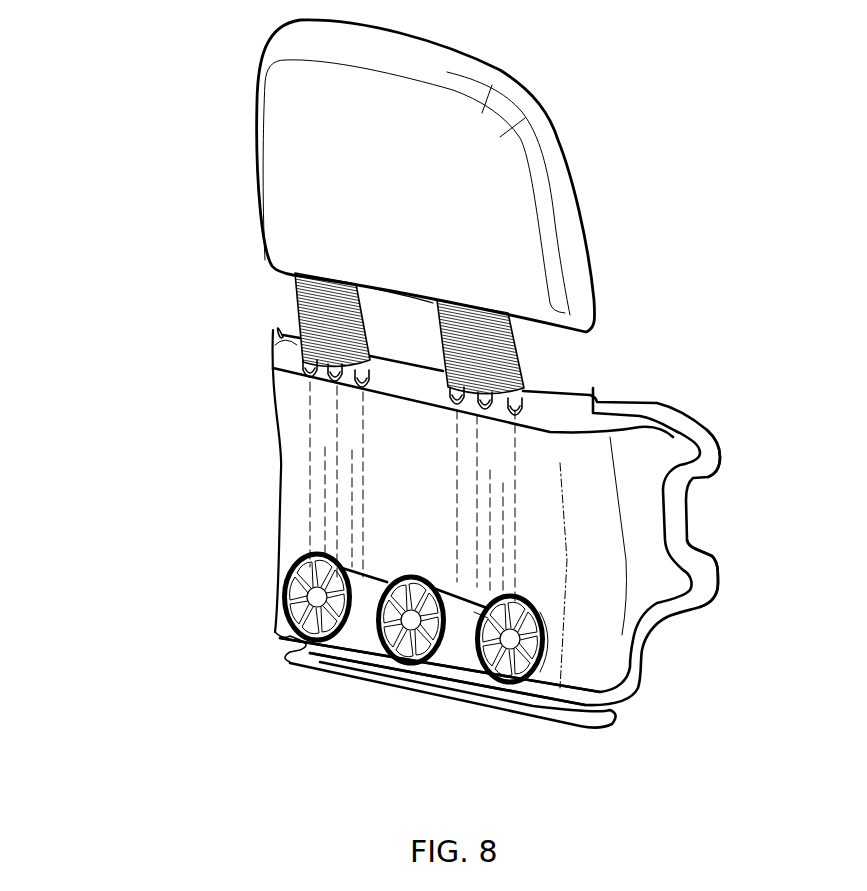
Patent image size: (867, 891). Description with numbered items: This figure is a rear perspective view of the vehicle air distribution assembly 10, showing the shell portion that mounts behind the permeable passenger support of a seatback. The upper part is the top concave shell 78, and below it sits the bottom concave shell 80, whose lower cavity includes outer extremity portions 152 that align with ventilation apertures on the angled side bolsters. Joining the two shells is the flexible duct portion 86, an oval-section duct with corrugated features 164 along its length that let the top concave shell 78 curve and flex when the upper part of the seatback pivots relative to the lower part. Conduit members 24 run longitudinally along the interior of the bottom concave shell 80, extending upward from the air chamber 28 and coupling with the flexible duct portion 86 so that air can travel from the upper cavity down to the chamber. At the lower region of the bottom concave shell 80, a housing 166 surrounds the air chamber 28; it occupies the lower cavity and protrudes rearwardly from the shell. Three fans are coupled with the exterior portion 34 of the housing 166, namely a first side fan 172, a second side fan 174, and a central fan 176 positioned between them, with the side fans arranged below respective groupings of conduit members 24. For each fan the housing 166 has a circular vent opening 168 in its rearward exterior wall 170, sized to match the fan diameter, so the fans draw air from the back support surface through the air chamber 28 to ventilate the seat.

The vehicle air distribution assembly 10 is at (172, 55).
The top concave shell 78 is at (493, 194).
The flexible duct portion 86 is at (300, 310).
The corrugated features 164 is at (444, 357).
The bottom concave shell 80 is at (627, 450).
The conduit member 24 is at (325, 490).
The outer extremity portions 152 is at (692, 477).
The housing 166 is at (375, 578).
The vent opening 168 is at (290, 586).
The central fan 176 is at (417, 620).
The first side fan 172 is at (276, 636).
The exterior portion 34 is at (368, 620).
The rearward exterior wall 170 is at (440, 680).
The air chamber 28 is at (458, 638).
The second side fan 174 is at (498, 632).